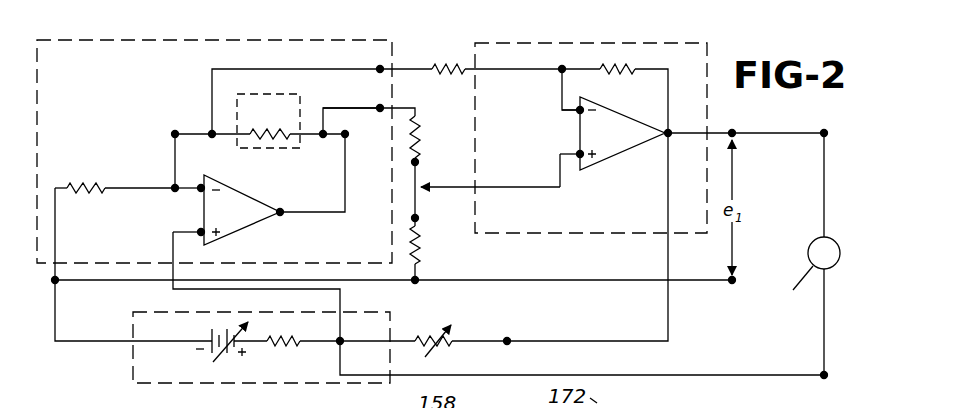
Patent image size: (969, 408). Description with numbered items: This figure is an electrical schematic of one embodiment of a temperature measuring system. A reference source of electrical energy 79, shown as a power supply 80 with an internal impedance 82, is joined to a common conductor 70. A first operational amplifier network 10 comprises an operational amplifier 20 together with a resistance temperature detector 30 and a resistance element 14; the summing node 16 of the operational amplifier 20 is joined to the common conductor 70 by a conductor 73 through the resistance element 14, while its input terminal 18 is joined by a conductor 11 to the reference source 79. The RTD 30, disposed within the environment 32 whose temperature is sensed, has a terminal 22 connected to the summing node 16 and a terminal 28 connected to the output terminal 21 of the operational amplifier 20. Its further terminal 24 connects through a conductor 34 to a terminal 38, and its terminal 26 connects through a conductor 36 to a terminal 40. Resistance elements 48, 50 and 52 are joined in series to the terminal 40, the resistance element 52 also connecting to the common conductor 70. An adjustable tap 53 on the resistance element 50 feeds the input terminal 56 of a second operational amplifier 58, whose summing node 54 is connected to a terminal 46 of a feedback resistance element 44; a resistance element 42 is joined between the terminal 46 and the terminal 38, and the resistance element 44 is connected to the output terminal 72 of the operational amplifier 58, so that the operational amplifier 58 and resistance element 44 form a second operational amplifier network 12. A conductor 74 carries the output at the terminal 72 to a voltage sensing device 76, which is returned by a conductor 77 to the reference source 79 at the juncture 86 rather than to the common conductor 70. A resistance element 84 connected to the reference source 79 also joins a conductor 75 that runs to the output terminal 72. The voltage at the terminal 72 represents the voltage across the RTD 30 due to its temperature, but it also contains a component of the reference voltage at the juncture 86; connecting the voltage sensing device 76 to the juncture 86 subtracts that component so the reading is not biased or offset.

The operational amplifier network 10 is at (281, 38).
The conductor 11 is at (172, 248).
The operational amplifier network 12 is at (597, 42).
The resistance element 14 is at (88, 185).
The summing node 16 is at (174, 186).
The input terminal 18 is at (200, 228).
The operational amplifier 20 is at (250, 192).
The output terminal 21 is at (285, 208).
The terminal 22 is at (174, 133).
The terminal 24 is at (215, 138).
The terminal 26 is at (325, 140).
The terminal 28 is at (348, 139).
The resistance temperature detector 30 is at (275, 142).
The environment 32 is at (298, 96).
The conductor 34 is at (242, 68).
The conductor 36 is at (358, 109).
The terminal 38 is at (378, 67).
The terminal 40 is at (383, 107).
The resistance element 42 is at (445, 64).
The resistance element 44 is at (622, 66).
The terminal 46 is at (560, 67).
The resistance element 48 is at (420, 130).
The resistance element 50 is at (418, 168).
The resistance element 52 is at (420, 250).
The adjustable tap 53 is at (430, 193).
The summing node 54 is at (577, 113).
The input terminal 56 is at (578, 153).
The operational amplifier 58 is at (625, 155).
The common conductor 70 is at (113, 280).
The output terminal 72 is at (670, 131).
The conductor 73 is at (57, 236).
The conductor 74 is at (785, 131).
The conductor 75 is at (610, 341).
The voltage sensing device 76 is at (835, 243).
The conductor 77 is at (748, 375).
The reference source of electrical energy 79 is at (130, 357).
The power supply 80 is at (220, 352).
The internal impedance 82 is at (283, 346).
The resistance element 84 is at (430, 330).
The juncture 86 is at (343, 344).